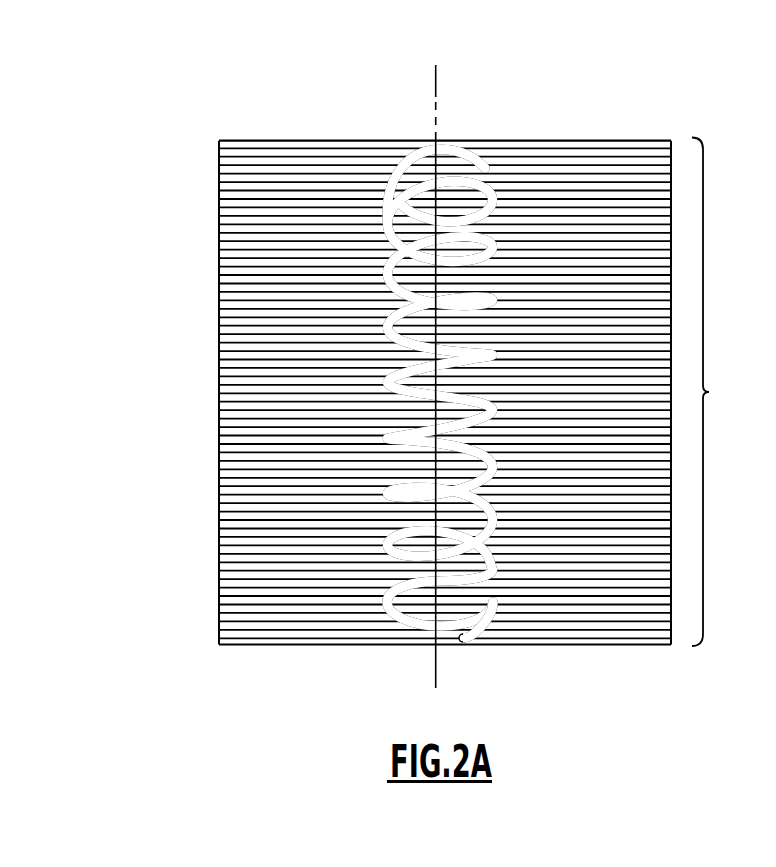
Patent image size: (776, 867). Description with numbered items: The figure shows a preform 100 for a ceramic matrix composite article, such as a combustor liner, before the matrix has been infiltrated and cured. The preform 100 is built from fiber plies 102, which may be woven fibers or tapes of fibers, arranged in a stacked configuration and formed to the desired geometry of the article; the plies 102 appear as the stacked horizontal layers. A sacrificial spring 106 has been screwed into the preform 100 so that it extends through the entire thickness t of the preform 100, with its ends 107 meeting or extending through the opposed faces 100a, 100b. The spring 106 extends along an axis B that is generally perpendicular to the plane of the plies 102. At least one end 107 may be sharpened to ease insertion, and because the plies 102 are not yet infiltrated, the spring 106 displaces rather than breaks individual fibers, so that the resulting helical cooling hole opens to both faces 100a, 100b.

The preform 100 is at (391, 372).
The opposed face 100a is at (301, 662).
The opposed face 100b is at (332, 119).
The fiber plies 102 is at (222, 181).
The sacrificial spring 106 is at (471, 407).
The end 107 is at (483, 660).
The axis B is at (433, 85).
The thickness t is at (707, 392).